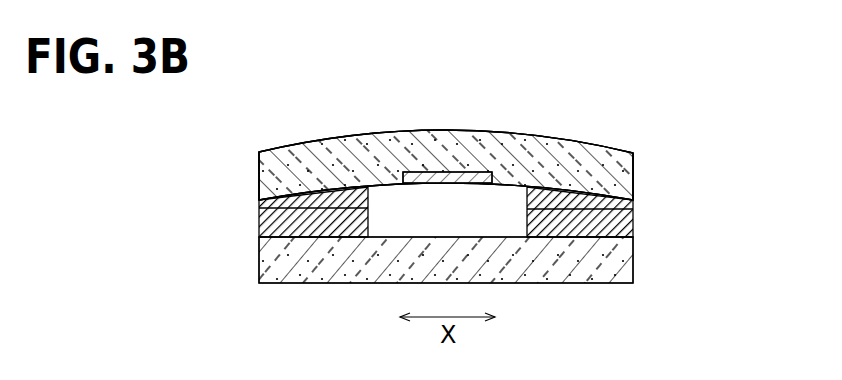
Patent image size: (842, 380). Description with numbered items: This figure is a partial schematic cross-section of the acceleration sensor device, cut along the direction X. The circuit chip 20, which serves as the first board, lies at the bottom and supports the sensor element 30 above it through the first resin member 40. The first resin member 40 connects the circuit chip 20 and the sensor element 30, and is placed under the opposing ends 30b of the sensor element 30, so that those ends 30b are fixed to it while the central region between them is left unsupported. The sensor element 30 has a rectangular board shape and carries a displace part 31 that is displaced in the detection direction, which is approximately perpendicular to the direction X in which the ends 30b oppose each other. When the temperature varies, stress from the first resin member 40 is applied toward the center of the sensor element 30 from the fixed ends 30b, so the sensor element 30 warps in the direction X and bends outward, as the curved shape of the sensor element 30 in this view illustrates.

The circuit chip 20 is at (620, 262).
The sensor element 30 is at (596, 146).
The ends of the sensor element 30b is at (259, 171).
The displace part 31 is at (405, 131).
The first resin member 40 is at (259, 222).